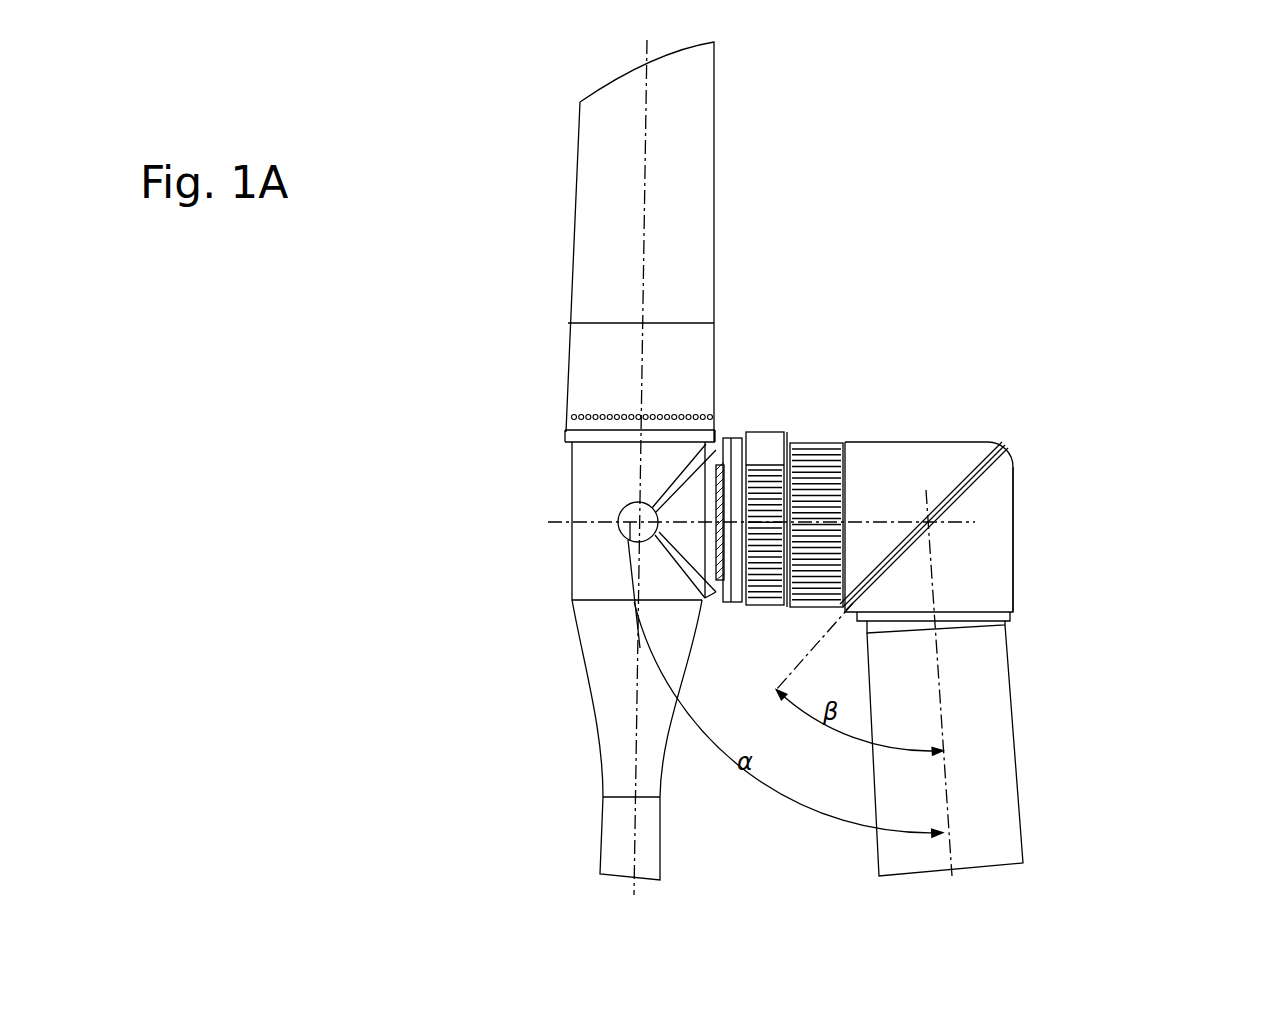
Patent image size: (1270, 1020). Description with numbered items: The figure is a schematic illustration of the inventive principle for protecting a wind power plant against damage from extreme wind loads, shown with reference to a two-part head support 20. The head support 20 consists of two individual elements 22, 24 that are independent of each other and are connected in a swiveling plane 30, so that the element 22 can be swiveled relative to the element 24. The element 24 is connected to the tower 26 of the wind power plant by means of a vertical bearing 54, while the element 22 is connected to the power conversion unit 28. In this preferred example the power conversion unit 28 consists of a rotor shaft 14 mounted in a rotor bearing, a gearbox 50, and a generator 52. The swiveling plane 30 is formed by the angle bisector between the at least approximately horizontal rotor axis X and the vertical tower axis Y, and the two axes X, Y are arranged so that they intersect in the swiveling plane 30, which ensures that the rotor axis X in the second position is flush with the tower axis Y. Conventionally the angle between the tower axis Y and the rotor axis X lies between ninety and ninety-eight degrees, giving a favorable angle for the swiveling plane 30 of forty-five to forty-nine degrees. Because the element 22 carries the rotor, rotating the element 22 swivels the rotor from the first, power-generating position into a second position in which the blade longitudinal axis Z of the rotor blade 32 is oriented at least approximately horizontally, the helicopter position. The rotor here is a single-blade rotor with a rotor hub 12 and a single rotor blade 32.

The rotor hub 12 is at (597, 497).
The rotor shaft 14 is at (729, 437).
The head support 20 is at (1065, 435).
The element 22 is at (1005, 445).
The element 24 is at (985, 540).
The tower 26 is at (988, 828).
The power conversion unit 28 is at (827, 397).
The swiveling plane 30 is at (937, 473).
The rotor blade 32 is at (603, 313).
The gearbox 50 is at (780, 460).
The generator 52 is at (830, 447).
The vertical bearing 54 is at (975, 622).
The rotor axis X is at (558, 523).
The tower axis Y is at (937, 650).
The blade longitudinal axis Z is at (645, 273).